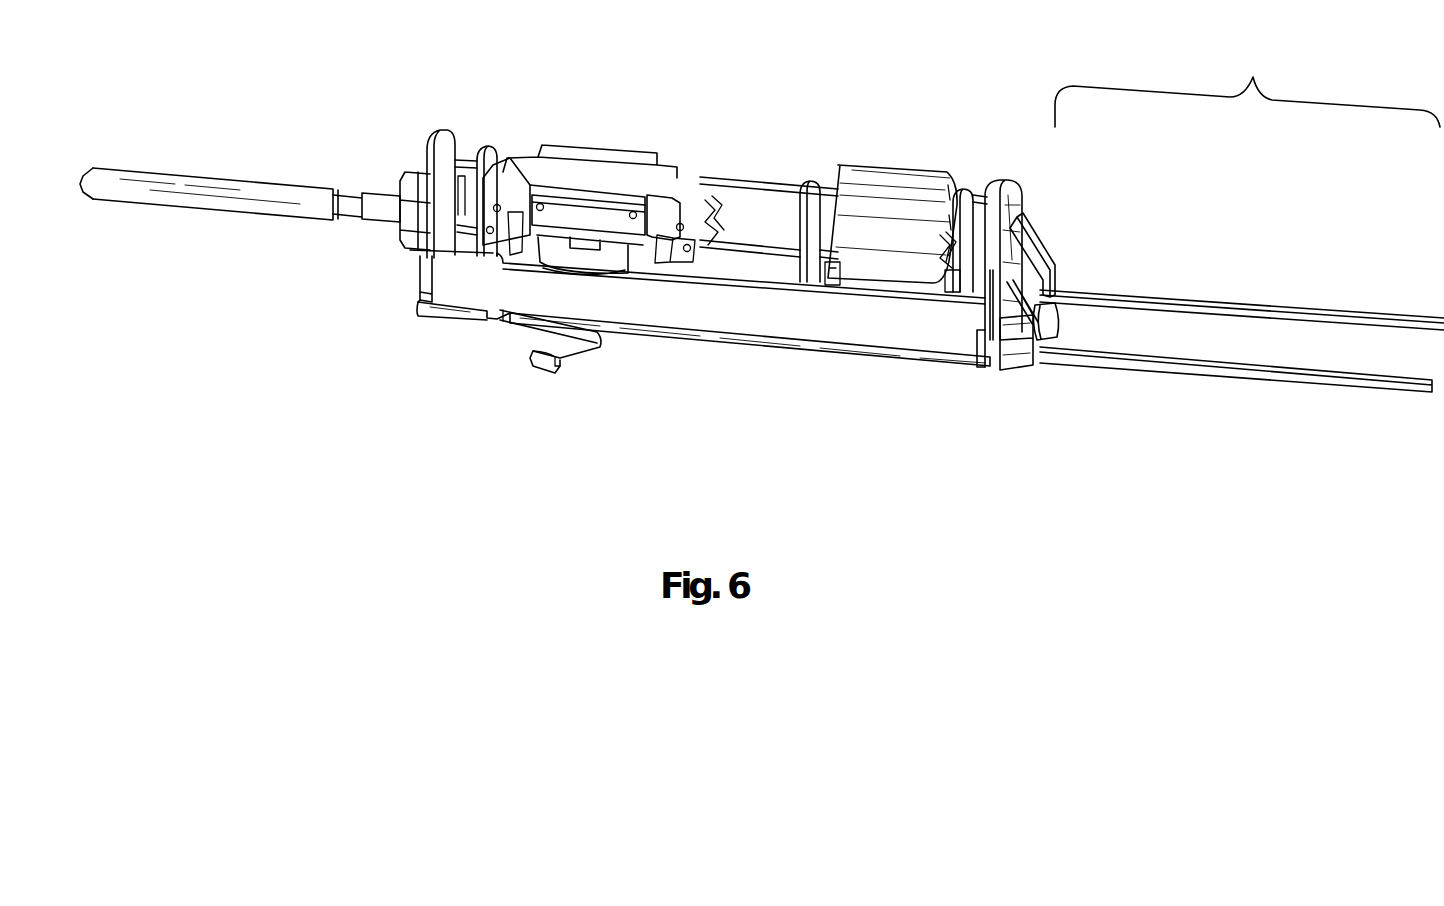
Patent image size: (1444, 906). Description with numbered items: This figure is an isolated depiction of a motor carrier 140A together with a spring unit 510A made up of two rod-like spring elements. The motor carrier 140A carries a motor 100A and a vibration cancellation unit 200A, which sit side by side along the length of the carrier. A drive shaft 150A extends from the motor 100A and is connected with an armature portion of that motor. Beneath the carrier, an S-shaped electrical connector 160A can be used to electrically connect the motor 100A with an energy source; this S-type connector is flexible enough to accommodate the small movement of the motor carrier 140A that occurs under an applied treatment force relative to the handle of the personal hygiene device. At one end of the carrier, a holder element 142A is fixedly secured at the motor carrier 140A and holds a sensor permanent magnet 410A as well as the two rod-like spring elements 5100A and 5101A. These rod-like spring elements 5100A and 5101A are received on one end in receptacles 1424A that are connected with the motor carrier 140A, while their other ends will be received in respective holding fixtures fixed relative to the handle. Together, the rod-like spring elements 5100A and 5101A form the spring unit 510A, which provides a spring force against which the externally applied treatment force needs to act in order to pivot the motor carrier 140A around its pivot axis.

The drive shaft 150A is at (217, 190).
The motor 100A is at (592, 140).
The vibration cancellation unit 200A is at (882, 155).
The holder element 142A is at (1012, 197).
The receptacles 1424A is at (1055, 282).
The sensor permanent magnet 410A is at (1055, 324).
The motor carrier 140A is at (814, 320).
The S-shaped electrical connector 160A is at (544, 374).
The spring unit 510A is at (1253, 77).
The rod-like spring element 5100A is at (1266, 366).
The rod-like spring element 5101A is at (1350, 316).